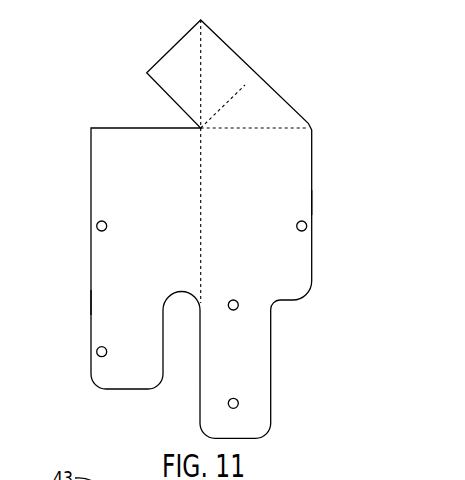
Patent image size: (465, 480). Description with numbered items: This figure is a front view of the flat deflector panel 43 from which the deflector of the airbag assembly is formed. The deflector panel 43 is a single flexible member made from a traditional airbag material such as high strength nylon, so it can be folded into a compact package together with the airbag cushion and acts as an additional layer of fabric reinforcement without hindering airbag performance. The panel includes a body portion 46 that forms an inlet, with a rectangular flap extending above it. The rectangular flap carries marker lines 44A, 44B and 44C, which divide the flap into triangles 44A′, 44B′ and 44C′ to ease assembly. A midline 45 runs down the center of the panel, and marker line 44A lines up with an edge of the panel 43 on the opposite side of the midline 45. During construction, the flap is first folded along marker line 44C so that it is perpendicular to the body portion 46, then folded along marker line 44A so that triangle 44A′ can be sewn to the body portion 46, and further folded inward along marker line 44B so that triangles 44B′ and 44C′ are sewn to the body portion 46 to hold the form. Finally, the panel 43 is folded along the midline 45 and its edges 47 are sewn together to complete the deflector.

The deflector panel 43 is at (66, 227).
The marker line 44A is at (198, 43).
The triangle 44A′ is at (174, 93).
The marker line 44B is at (249, 80).
The triangle 44B′ is at (223, 93).
The marker line 44C is at (289, 124).
The triangle 44C′ is at (254, 113).
The midline 45 is at (200, 160).
The body portion 46 is at (293, 182).
The edges 47 is at (312, 203).